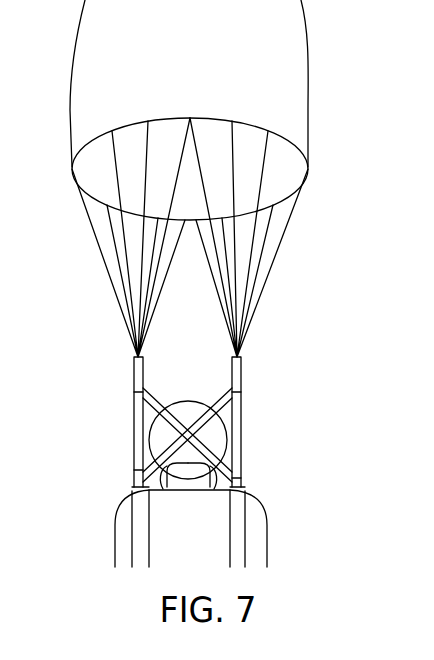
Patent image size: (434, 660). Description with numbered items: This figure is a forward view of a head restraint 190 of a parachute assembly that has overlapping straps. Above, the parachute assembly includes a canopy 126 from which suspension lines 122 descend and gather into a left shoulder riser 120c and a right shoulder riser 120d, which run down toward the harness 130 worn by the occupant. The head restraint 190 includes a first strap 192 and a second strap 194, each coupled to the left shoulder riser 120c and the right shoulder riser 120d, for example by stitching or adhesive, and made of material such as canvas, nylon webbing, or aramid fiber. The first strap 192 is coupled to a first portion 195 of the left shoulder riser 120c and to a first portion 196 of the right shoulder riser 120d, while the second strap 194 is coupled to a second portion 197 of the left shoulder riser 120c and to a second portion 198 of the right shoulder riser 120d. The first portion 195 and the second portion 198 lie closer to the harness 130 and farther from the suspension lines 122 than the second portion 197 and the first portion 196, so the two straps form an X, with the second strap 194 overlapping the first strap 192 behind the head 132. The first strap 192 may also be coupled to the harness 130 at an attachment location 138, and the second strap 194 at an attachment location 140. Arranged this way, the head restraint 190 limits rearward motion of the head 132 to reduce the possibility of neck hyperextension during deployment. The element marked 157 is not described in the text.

The canopy 126 is at (181, 67).
The suspension lines 122 is at (250, 268).
The left shoulder riser 120c is at (134, 373).
The right shoulder riser 120d is at (232, 367).
The second portion of left shoulder riser 197 is at (137, 395).
The first portion of right shoulder riser 196 is at (240, 392).
The head restraint 190 is at (150, 428).
The head 132 is at (187, 420).
The first portion of left shoulder riser 195 is at (133, 471).
The second portion of right shoulder riser 198 is at (237, 480).
The attachment location 138 is at (133, 492).
The attachment location 140 is at (246, 486).
The first strap 192 is at (167, 488).
The second strap 194 is at (212, 488).
The harness 130 is at (138, 533).
The harness body 157 is at (203, 551).